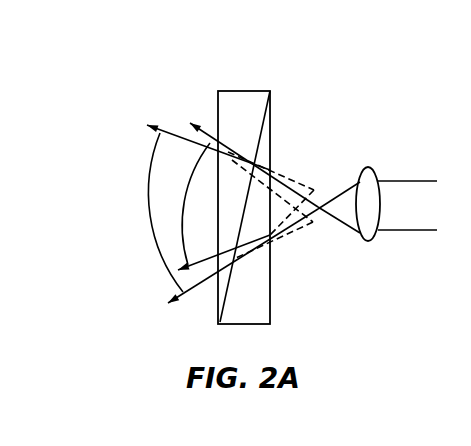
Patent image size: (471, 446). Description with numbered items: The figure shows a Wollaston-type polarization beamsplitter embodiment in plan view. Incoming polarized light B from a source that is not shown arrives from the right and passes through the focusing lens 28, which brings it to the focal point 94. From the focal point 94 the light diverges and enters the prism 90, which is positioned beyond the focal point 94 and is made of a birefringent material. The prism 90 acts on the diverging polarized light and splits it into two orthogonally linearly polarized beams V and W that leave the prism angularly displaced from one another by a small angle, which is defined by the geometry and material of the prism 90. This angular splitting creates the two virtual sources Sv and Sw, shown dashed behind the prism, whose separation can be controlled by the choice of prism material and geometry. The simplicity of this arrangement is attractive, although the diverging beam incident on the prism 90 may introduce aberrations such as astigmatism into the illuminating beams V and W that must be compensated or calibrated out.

The prism 90 is at (272, 112).
The focusing lens 28 is at (378, 173).
The focal point 94 is at (324, 217).
The incoming polarized light B is at (407, 233).
The virtual source Sv is at (322, 182).
The virtual source Sw is at (318, 236).
The orthogonally linearly polarized beam V is at (150, 172).
The orthogonally linearly polarized beam W is at (181, 240).